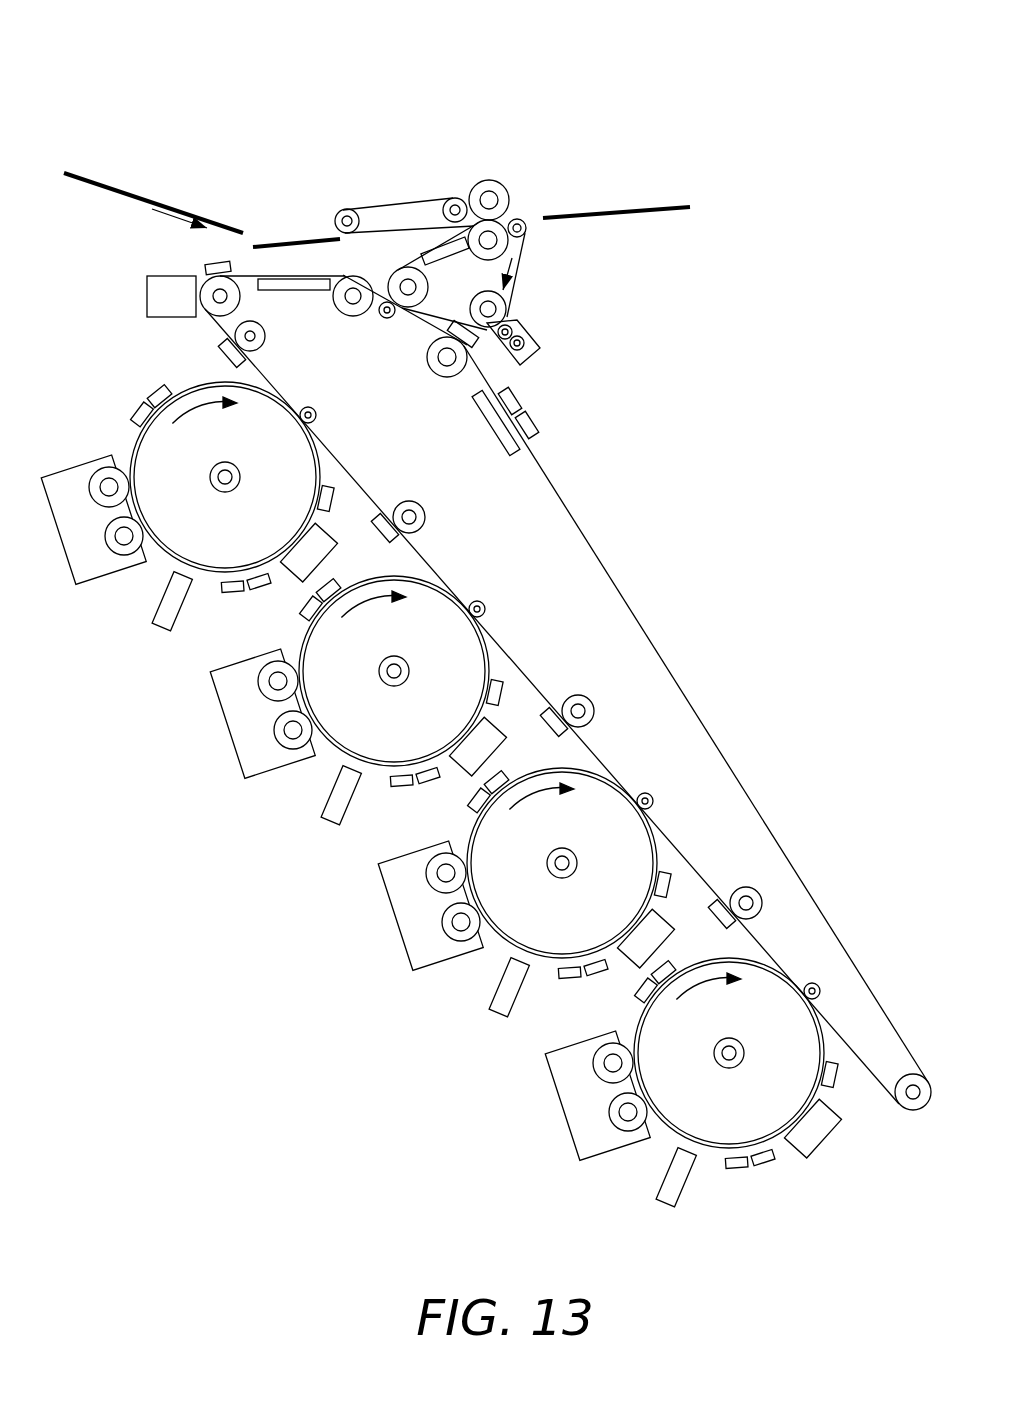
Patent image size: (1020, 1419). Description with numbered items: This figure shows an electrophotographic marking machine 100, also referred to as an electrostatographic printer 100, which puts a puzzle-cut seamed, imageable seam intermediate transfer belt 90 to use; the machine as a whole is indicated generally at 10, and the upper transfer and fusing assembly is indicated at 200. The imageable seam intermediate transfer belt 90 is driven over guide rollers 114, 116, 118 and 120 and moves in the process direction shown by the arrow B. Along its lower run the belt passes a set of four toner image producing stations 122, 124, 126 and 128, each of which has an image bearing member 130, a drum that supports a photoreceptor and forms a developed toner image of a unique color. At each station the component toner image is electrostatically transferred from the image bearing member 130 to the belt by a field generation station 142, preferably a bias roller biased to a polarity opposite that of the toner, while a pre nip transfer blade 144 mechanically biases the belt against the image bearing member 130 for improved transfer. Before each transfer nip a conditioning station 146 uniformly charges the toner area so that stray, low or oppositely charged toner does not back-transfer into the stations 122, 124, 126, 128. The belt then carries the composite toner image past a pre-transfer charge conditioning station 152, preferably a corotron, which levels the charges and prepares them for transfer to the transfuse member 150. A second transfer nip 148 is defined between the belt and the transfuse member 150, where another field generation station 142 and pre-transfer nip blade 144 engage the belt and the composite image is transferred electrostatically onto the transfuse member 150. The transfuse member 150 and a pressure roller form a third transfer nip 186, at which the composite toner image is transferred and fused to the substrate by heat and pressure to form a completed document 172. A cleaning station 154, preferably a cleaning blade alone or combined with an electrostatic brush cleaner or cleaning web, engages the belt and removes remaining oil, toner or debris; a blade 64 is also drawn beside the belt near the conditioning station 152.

The printing machine 10 is at (732, 405).
The electrophotographic marking machine 100 is at (573, 95).
The transfer/fusing assembly 200 is at (421, 170).
The completed document 172 is at (637, 208).
The third transfer nip 186 is at (513, 212).
The transfuse member 150 is at (521, 271).
The second transfer nip 148 is at (395, 273).
The cleaning station 154 is at (150, 296).
The guide roller 116 is at (210, 309).
The guide roller 118 is at (350, 309).
The guide roller 120 is at (440, 371).
The imageable seam intermediate transfer belt 90 is at (580, 527).
The process direction arrow B is at (595, 585).
The cleaning blade 64 is at (508, 443).
The pre-transfer charge conditioning station 152 is at (515, 403).
The image bearing member 130 is at (320, 441).
The field generation station 142 is at (350, 281).
The pre nip transfer blade 144 is at (402, 309).
The conditioning station 146 is at (225, 354).
The toner image producing station 122 is at (150, 550).
The toner image producing station 124 is at (340, 750).
The toner image producing station 126 is at (508, 942).
The toner image producing station 128 is at (657, 1123).
The guide roller 114 is at (902, 1101).